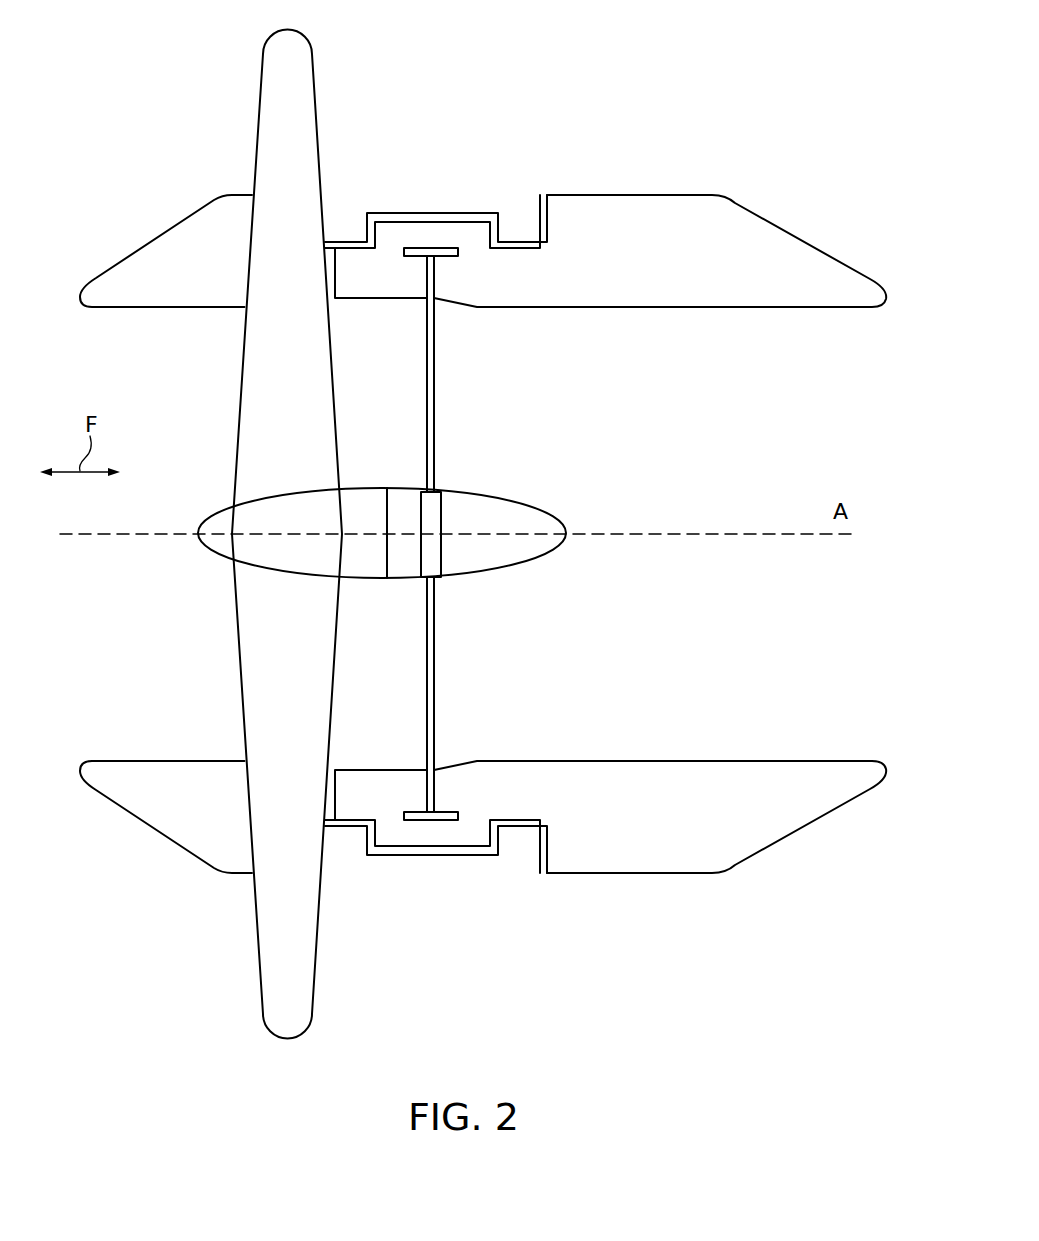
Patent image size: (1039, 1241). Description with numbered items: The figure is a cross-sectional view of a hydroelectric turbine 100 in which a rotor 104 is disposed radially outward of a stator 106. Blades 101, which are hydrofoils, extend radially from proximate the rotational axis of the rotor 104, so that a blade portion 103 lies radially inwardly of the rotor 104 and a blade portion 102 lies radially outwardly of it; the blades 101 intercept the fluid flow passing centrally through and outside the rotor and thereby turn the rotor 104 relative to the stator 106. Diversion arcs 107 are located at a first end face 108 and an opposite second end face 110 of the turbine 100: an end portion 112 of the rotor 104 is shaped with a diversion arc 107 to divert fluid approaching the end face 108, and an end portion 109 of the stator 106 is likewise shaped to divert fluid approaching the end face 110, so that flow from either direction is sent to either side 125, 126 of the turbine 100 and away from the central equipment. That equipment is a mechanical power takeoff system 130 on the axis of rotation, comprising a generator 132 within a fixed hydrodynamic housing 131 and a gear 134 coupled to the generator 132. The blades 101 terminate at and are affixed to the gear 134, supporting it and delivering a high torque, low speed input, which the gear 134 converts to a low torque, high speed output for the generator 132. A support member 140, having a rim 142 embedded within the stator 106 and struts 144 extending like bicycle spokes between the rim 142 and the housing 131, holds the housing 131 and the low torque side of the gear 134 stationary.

The hydroelectric turbine 100 is at (146, 143).
The blade 101 is at (258, 92).
The blade portion 102 is at (298, 118).
The blade portion 103 is at (250, 383).
The rotor 104 is at (343, 214).
The stator 106 is at (743, 222).
The diversion arc 107 is at (140, 268).
The first end face 108 is at (118, 625).
The end portion of the stator 109 is at (820, 248).
The second end face 110 is at (796, 461).
The end portion of the rotor 112 is at (185, 228).
The side of the turbine 125 is at (481, 64).
The side of the turbine 126 is at (520, 918).
The mechanical power takeoff system 130 is at (472, 470).
The housing 131 is at (497, 570).
The generator 132 is at (515, 530).
The gear 134 is at (345, 565).
The support member 140 is at (483, 384).
The rim 142 is at (443, 246).
The strut 144 is at (427, 385).